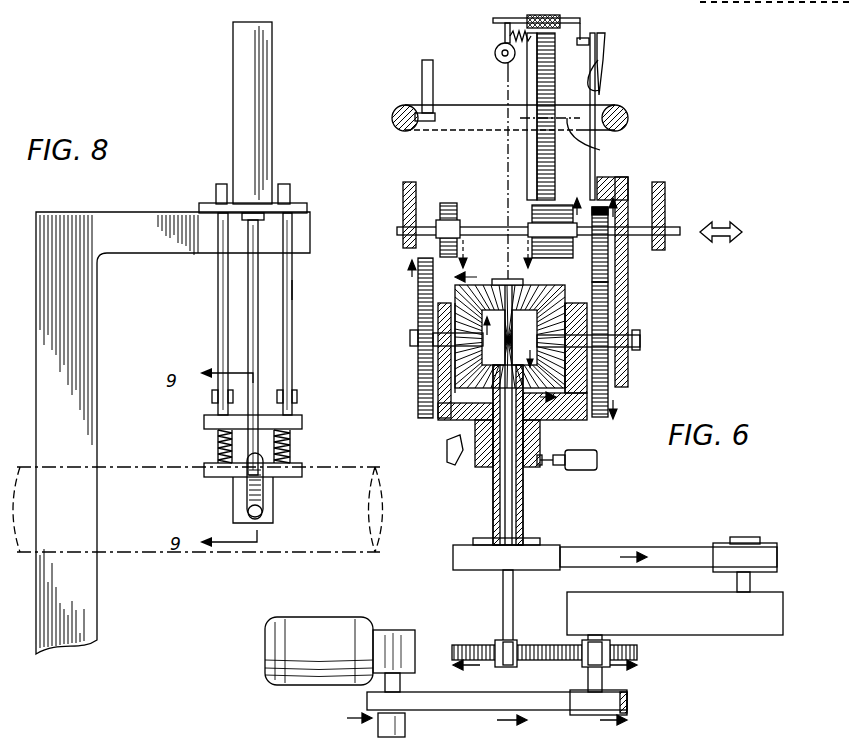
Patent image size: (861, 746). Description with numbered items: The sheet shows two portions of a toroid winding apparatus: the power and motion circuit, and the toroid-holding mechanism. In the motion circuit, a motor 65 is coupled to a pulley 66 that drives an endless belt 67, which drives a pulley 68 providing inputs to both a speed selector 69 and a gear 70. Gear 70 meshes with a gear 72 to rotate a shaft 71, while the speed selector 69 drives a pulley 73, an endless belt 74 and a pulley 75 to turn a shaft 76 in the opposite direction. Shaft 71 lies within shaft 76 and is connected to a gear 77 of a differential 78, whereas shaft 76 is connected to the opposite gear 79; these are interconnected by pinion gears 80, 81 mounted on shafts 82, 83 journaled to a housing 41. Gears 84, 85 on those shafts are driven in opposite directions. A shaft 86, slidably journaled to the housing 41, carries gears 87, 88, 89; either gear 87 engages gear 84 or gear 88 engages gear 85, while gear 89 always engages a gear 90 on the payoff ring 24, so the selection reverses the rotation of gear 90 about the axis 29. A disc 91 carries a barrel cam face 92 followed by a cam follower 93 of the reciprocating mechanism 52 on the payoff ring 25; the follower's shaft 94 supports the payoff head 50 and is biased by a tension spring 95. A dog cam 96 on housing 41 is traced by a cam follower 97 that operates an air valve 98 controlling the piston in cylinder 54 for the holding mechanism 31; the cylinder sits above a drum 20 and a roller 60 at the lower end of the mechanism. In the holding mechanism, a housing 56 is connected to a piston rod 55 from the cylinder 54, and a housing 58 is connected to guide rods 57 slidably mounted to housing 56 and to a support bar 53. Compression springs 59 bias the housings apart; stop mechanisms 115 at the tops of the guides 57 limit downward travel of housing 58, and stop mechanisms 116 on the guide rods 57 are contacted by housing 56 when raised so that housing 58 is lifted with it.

In FIG. 8, the cylinder drum 20 is at (198, 509).
In FIG. 6, the cylinder drum 20 is at (628, 118).
In FIG. 6, the payoff ring 24 is at (527, 145).
In FIG. 6, the payoff ring 25 is at (601, 140).
In FIG. 6, the axis 29 is at (506, 178).
In FIG. 8, the holding mechanism 31 is at (300, 288).
In FIG. 6, the holding mechanism 31 is at (422, 80).
In FIG. 6, the housing 41 is at (665, 190).
In FIG. 6, the payoff head 50 is at (503, 63).
In FIG. 6, the reciprocating mechanism 52 is at (483, 27).
In FIG. 8, the support bar 53 is at (146, 212).
In FIG. 8, the cylinder 54 is at (233, 96).
In FIG. 8, the piston rod 55 is at (258, 332).
In FIG. 8, the housing 56 is at (302, 423).
In FIG. 8, the guide rods 57 is at (218, 332).
In FIG. 8, the housing 58 is at (302, 475).
In FIG. 8, the compression springs 59 is at (218, 448).
In FIG. 8, the roller 60 is at (262, 512).
In FIG. 6, the motor 65 is at (305, 617).
In FIG. 6, the pulley 66 is at (405, 722).
In FIG. 6, the endless belt 67 is at (482, 693).
In FIG. 6, the pulley 68 is at (617, 692).
In FIG. 6, the speed selector 69 is at (745, 635).
In FIG. 6, the gear 70 is at (638, 660).
In FIG. 6, the shaft 71 is at (503, 598).
In FIG. 6, the gear 72 is at (488, 643).
In FIG. 6, the pulley 73 is at (718, 540).
In FIG. 6, the endless belt 74 is at (640, 550).
In FIG. 6, the pulley 75 is at (475, 540).
In FIG. 6, the shaft 76 is at (523, 520).
In FIG. 6, the gear 77 is at (525, 288).
In FIG. 6, the differential 78 is at (565, 296).
In FIG. 6, the gear 79 is at (560, 425).
In FIG. 6, the pinion gear 80 is at (460, 372).
In FIG. 6, the pinion gear 81 is at (600, 360).
In FIG. 6, the shaft 82 is at (412, 334).
In FIG. 6, the shaft 83 is at (615, 340).
In FIG. 6, the gear 84 is at (418, 302).
In FIG. 6, the gear 85 is at (608, 313).
In FIG. 6, the shaft 86 is at (676, 240).
In FIG. 6, the gear 87 is at (446, 203).
In FIG. 6, the gear 88 is at (620, 182).
In FIG. 6, the gear 89 is at (592, 205).
In FIG. 6, the gear 90 is at (550, 205).
In FIG. 6, the disc 91 is at (597, 70).
In FIG. 6, the cam face 92 is at (601, 92).
In FIG. 6, the cam follower 93 is at (605, 42).
In FIG. 6, the shaft 94 is at (590, 28).
In FIG. 6, the tension spring 95 is at (505, 38).
In FIG. 6, the dog cam 96 is at (540, 465).
In FIG. 6, the cam follower 97 is at (560, 468).
In FIG. 6, the air valve 98 is at (578, 450).
In FIG. 8, the stop mechanism 115 is at (216, 192).
In FIG. 8, the stop mechanism 116 is at (212, 398).